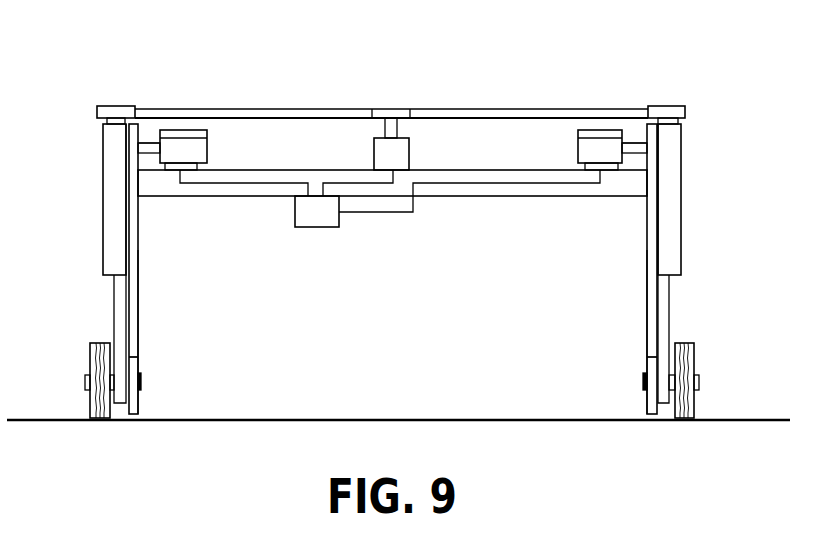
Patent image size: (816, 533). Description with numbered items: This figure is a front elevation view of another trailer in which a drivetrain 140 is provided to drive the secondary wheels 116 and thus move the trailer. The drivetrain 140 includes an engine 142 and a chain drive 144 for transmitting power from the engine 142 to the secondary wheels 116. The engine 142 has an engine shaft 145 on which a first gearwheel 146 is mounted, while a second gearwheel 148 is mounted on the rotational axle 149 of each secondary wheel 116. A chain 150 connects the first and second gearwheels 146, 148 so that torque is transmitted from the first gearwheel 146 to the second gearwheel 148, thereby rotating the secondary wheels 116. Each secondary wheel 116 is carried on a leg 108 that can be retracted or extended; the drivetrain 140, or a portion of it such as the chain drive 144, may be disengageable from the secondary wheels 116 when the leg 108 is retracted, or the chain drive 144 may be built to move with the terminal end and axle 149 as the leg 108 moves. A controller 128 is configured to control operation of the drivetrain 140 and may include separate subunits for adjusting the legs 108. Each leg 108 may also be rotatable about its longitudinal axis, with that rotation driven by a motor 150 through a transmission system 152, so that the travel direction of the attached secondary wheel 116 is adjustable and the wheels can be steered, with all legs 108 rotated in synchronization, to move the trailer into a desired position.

The leg 108 is at (114, 304).
The secondary wheel 116 is at (90, 352).
The controller 128 is at (319, 227).
The drivetrain 140 is at (218, 328).
The engine 142 is at (208, 148).
The chain drive 144 is at (150, 250).
The engine shaft 145 is at (148, 140).
The first gearwheel 146 is at (124, 153).
The second gearwheel 148 is at (141, 360).
The rotational axle 149 is at (141, 383).
The chain 150 is at (373, 153).
The transmission system 152 is at (260, 107).